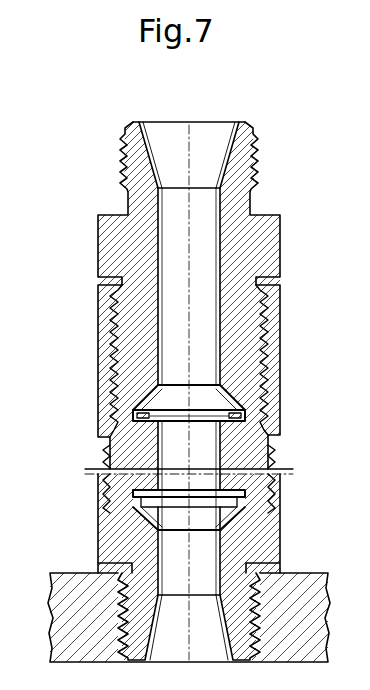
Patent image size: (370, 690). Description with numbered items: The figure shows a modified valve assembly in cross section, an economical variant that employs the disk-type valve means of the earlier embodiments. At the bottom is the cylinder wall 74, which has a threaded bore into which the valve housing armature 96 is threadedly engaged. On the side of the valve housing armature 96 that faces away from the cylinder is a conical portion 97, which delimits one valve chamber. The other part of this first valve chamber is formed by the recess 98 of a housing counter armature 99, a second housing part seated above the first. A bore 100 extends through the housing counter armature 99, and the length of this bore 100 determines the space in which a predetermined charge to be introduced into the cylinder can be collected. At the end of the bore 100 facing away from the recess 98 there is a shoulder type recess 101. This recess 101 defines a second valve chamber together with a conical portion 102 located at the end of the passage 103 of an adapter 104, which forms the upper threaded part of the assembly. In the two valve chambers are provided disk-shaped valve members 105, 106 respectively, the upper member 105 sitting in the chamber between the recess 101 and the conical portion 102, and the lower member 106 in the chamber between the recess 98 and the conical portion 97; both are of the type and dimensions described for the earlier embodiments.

The cylinder wall 74 is at (58, 615).
The valve housing armature 96 is at (110, 551).
The conical portion 97 is at (240, 516).
The recess 98 is at (245, 489).
The housing counter armature 99 is at (245, 455).
The bore 100 is at (168, 447).
The shoulder type recess 101 is at (242, 418).
The conical portion 102 is at (250, 388).
The passage 103 is at (213, 261).
The adapter 104 is at (265, 227).
The disk-shaped valve member 105 is at (163, 408).
The disk-shaped valve member 106 is at (110, 511).